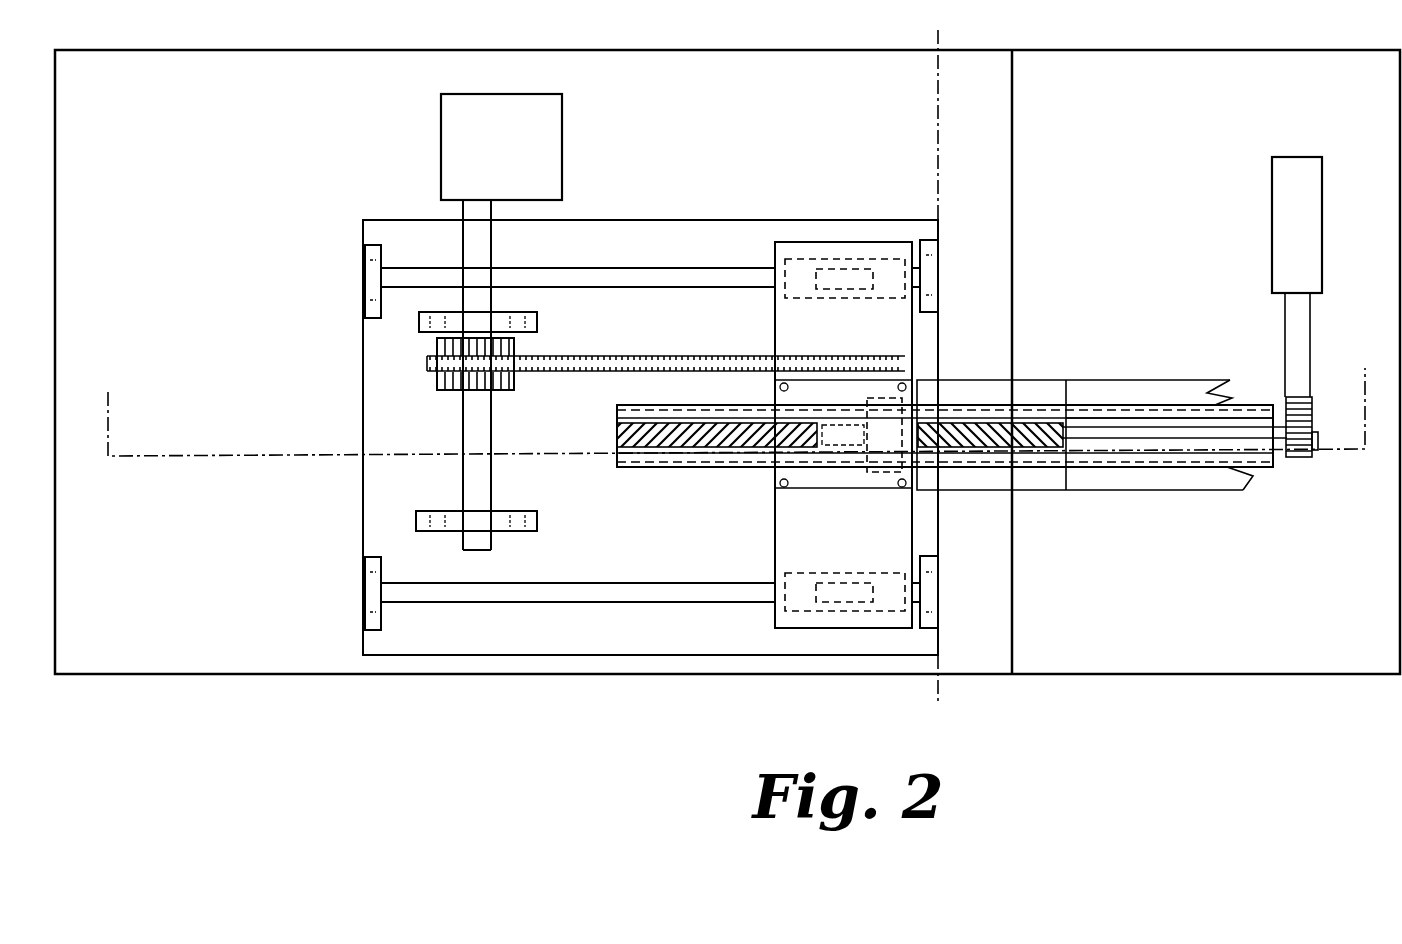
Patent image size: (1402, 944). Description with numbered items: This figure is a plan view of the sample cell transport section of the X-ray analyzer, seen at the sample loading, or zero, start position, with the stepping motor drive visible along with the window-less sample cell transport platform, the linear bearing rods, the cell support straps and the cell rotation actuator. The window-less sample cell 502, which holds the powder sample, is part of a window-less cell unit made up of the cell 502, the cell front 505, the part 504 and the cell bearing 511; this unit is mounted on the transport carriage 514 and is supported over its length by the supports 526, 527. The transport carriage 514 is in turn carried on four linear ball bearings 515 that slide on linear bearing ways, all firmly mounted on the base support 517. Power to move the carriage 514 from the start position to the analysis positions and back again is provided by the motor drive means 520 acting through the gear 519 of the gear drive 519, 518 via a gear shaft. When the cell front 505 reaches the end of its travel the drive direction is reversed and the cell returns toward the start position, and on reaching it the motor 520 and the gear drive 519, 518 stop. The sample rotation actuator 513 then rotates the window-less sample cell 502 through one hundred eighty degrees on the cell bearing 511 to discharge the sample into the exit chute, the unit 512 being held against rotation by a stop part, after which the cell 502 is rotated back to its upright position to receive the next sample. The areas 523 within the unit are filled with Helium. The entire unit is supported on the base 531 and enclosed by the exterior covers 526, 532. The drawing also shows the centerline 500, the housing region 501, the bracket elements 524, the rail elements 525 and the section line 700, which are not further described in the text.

The longitudinal axis / centerline 500 is at (731, 400).
The cylinder housing 501 is at (1085, 381).
The window-less sample cell 502 is at (977, 437).
The window-less sample cell unit part 504 is at (839, 433).
The front of the cell 505 is at (657, 447).
The window-less cell bearing 511 is at (1228, 428).
The unit 512 is at (1162, 405).
The sample rotation actuator 513 is at (1304, 233).
The transport carriage 514 is at (813, 480).
The linear ball bearings 515 is at (843, 400).
The base support 517 is at (513, 628).
The gear drive 518 is at (566, 360).
The gear 519 is at (495, 380).
The motor drive means 520 is at (519, 142).
The areas 523 is at (403, 403).
The mounting brackets 524 is at (372, 300).
The guide rails 525 is at (566, 282).
The support 526 is at (758, 400).
The support 527 is at (706, 416).
The base 531 is at (861, 667).
The exterior cover 532 is at (240, 155).
The section line 700 is at (937, 371).